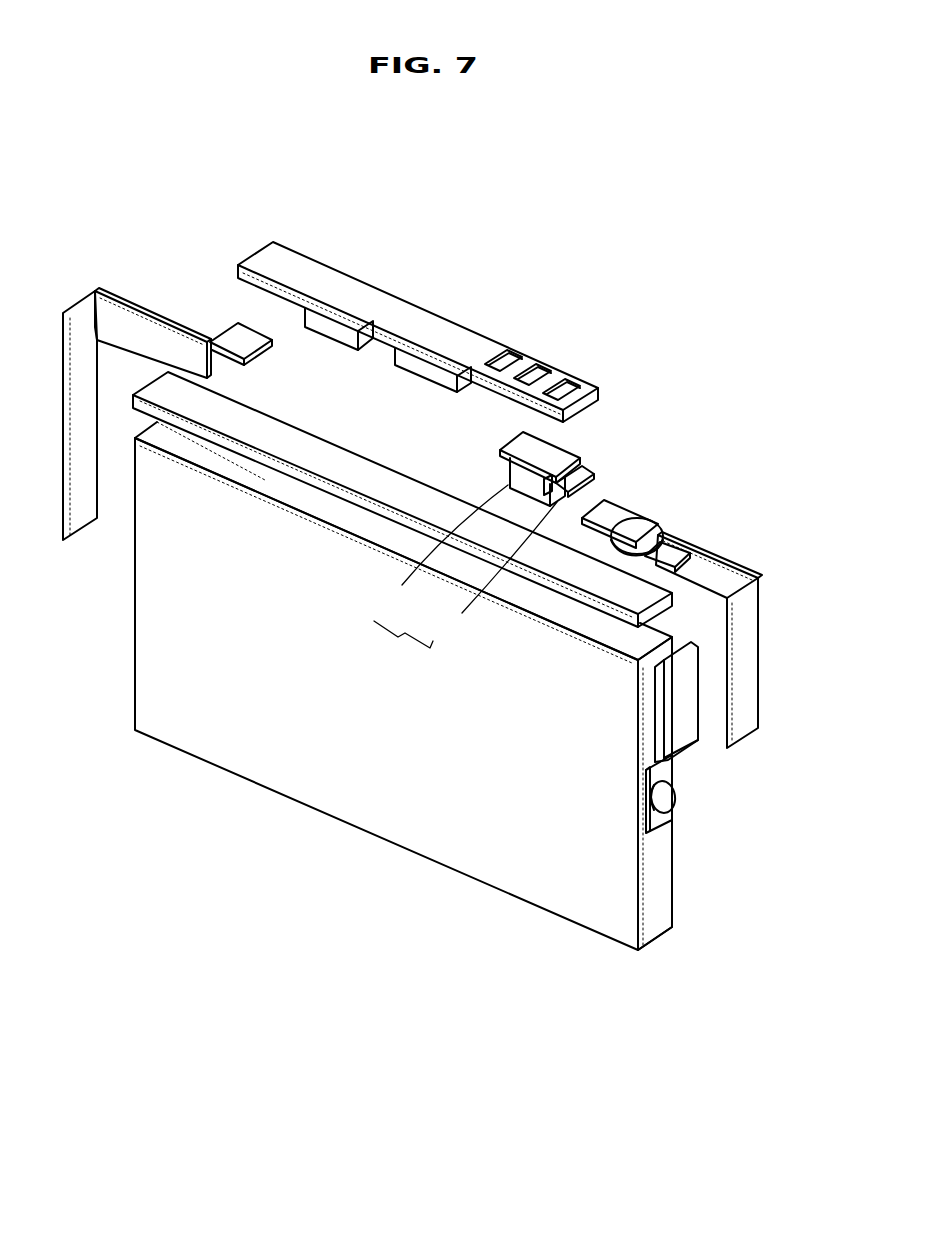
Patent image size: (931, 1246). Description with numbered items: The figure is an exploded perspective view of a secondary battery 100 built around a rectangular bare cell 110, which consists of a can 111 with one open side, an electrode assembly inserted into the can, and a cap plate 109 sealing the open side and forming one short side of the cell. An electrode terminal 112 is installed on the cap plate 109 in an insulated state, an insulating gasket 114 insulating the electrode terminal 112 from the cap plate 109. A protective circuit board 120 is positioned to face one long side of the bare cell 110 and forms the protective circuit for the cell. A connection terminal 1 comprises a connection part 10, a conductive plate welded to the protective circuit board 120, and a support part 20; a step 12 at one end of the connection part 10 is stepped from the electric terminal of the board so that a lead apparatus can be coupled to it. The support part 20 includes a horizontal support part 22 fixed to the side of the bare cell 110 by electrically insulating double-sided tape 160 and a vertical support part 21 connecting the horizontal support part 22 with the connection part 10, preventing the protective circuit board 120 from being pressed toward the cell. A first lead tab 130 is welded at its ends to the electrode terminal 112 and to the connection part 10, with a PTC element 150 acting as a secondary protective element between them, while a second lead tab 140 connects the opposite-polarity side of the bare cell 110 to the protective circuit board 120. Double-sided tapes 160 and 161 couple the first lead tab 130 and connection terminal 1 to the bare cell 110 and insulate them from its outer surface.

The secondary battery 100 is at (95, 208).
The bare cell 110 is at (303, 782).
The can 111 is at (472, 802).
The cap plate 109 is at (665, 898).
The electrode terminal 112 is at (673, 800).
The insulating gasket 114 is at (660, 821).
The protective circuit board 120 is at (420, 294).
The first lead tab 130 is at (751, 657).
The second lead tab 140 is at (136, 316).
The PTC element 150 is at (657, 517).
The double-sided tape 160 is at (288, 437).
The double-sided tape 161 is at (683, 730).
The connection part 10 is at (512, 436).
The step 12 is at (594, 472).
The connection terminal 1 is at (593, 430).
The support part 20 is at (403, 647).
The vertical support part 21 is at (440, 551).
The horizontal support part 22 is at (497, 573).